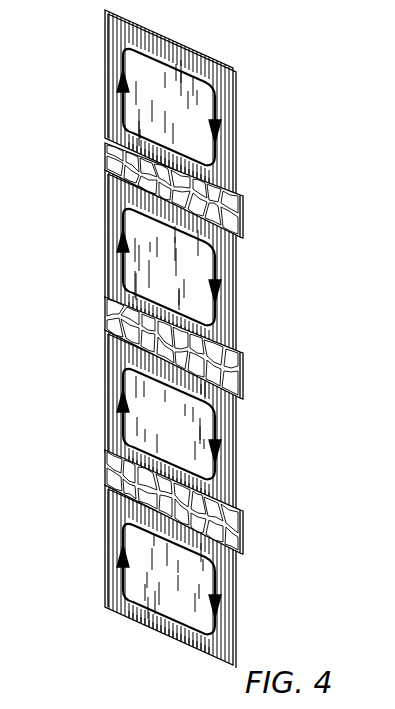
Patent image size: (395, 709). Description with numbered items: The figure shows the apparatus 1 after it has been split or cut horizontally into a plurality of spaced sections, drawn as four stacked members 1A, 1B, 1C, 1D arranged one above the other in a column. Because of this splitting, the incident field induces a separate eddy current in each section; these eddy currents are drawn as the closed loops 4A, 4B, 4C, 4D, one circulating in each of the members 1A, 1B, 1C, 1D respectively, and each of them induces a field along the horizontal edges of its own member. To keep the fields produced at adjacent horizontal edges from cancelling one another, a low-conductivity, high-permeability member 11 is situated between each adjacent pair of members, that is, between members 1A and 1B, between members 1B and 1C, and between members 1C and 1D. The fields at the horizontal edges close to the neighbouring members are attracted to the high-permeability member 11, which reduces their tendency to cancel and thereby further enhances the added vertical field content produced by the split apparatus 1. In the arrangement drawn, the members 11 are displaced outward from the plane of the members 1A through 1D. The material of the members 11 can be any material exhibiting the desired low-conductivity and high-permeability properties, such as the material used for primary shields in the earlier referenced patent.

The apparatus 1 is at (168, 339).
The member 1A is at (237, 106).
The member 1B is at (229, 300).
The member 1C is at (230, 462).
The member 1D is at (230, 618).
The eddy current 4A is at (123, 100).
The eddy current 4B is at (123, 257).
The eddy current 4C is at (123, 420).
The eddy current 4D is at (123, 574).
The low-conductivity, high-permeability member 11 is at (241, 200).